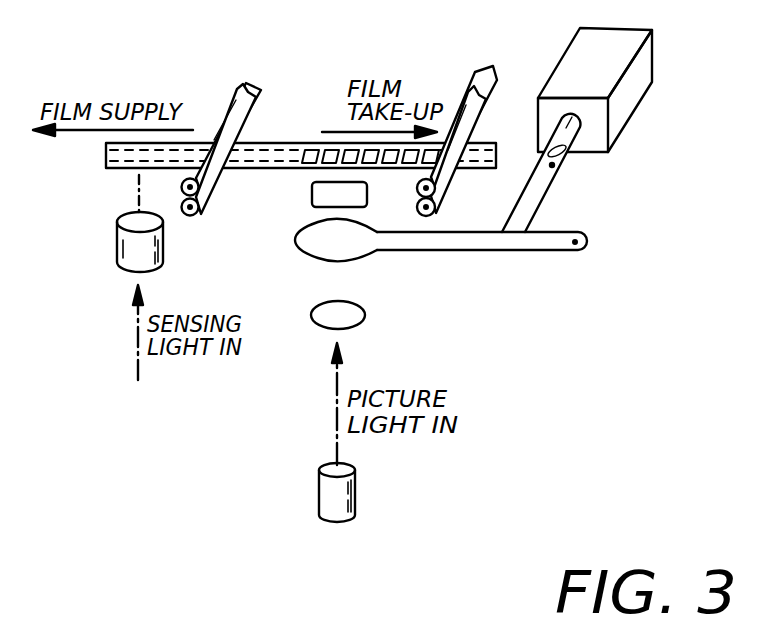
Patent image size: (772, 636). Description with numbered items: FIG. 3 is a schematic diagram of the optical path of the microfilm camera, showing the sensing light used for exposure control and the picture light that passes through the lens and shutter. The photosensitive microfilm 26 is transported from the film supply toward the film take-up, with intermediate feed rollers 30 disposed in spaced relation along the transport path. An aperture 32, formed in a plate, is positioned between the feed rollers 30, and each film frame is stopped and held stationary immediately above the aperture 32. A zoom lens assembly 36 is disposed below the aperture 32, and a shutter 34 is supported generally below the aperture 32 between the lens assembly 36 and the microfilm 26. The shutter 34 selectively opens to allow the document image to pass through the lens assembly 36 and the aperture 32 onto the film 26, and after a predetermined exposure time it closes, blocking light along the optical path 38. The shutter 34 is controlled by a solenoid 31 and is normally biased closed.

The photosensitive film supply 26 is at (290, 143).
The feed rollers 30 is at (226, 116).
The solenoid 31 is at (560, 62).
The aperture 32 is at (312, 186).
The shutter 34 is at (296, 237).
The zoom lens assembly 36 is at (319, 503).
The optical path 38 is at (336, 395).